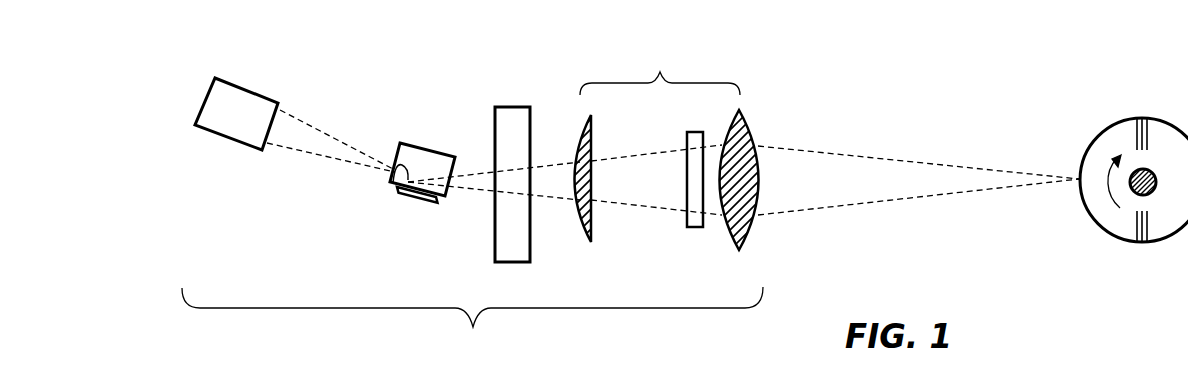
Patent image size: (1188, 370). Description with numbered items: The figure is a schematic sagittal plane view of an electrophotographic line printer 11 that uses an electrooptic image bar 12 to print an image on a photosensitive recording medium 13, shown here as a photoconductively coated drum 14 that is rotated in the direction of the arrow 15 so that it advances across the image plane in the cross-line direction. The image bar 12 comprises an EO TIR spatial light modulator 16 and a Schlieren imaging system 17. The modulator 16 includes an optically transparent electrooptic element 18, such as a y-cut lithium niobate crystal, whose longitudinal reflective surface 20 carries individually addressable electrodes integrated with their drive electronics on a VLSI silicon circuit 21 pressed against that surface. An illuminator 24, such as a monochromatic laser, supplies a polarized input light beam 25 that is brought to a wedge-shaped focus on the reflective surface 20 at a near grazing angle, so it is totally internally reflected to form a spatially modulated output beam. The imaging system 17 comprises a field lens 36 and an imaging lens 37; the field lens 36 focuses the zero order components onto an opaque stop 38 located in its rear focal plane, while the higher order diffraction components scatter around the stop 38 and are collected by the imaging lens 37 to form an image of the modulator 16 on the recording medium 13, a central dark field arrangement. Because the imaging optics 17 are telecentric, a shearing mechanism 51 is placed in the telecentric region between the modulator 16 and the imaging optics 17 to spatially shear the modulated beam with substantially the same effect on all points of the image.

The electrophotographic line printer 11 is at (241, 48).
The electrooptic image bar 12 is at (472, 320).
The photosensitive recording medium 13 is at (1107, 194).
The photoconductively coated drum 14 is at (1095, 220).
The arrow 15 is at (1107, 187).
The EO TIR spatial light modulator 16 is at (440, 133).
The Schlieren imaging system 17 is at (675, 194).
The electrooptic element 18 is at (400, 143).
The reflective surface 20 is at (393, 167).
The VLSI silicon circuit 21 is at (413, 198).
The illuminator 24 is at (260, 92).
The input light beam 25 is at (302, 135).
The field lens 36 is at (580, 220).
The imaging lens 37 is at (753, 228).
The opaque stop 38 is at (698, 227).
The shearing mechanism 51 is at (512, 107).